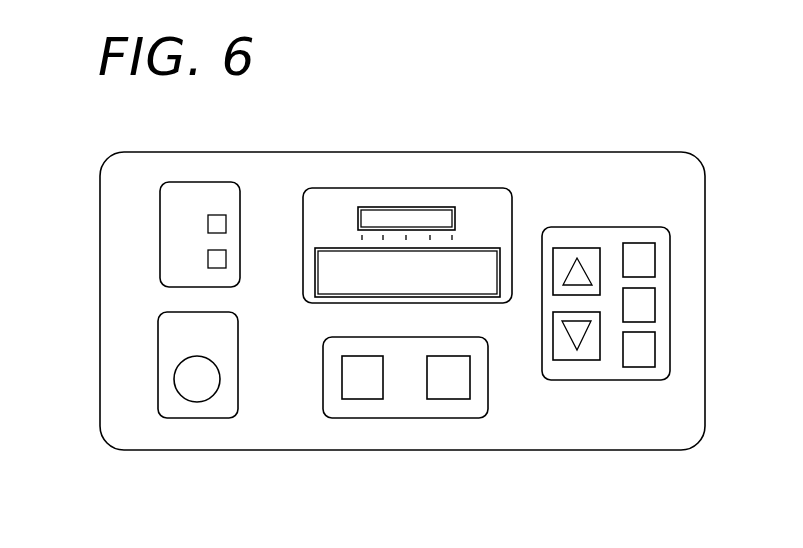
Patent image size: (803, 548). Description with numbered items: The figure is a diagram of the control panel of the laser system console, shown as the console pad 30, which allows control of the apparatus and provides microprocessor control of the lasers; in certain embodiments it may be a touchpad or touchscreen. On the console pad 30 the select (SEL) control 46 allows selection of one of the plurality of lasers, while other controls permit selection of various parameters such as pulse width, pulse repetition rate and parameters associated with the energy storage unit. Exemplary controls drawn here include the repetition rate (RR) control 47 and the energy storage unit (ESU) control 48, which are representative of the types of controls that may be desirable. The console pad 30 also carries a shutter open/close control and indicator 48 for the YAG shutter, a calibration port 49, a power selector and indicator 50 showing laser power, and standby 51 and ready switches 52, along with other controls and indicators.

The console pad 30 is at (705, 287).
The select (SEL) control 46 is at (655, 254).
The repetition rate (RR) control 47 is at (655, 349).
The energy storage unit (ESU) control 48 is at (160, 222).
The calibration port 49 is at (158, 371).
The power selector and indicator 50 is at (416, 188).
The standby switch 51 is at (368, 399).
The ready switch 52 is at (447, 399).